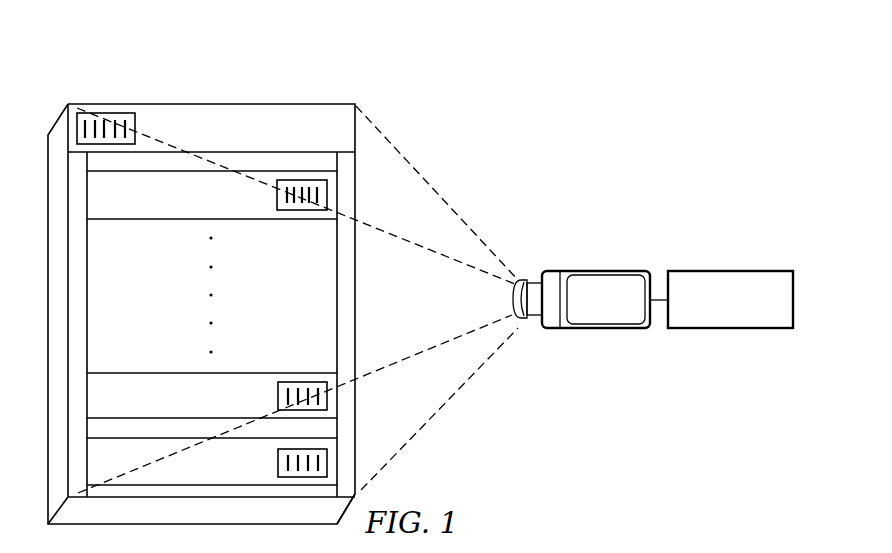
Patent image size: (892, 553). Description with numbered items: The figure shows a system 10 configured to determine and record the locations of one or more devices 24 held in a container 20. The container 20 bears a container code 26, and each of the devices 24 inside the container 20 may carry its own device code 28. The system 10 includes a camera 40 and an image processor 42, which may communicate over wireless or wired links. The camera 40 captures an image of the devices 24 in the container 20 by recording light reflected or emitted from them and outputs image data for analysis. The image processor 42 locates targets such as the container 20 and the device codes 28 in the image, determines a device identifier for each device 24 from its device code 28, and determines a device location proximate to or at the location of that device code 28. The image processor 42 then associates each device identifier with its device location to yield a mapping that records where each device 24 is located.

The system 10 is at (523, 245).
The container 20 is at (242, 100).
The device 24 is at (98, 194).
The container code 26 is at (105, 113).
The device code 28 is at (303, 210).
The camera 40 is at (603, 329).
The image processor 42 is at (730, 329).